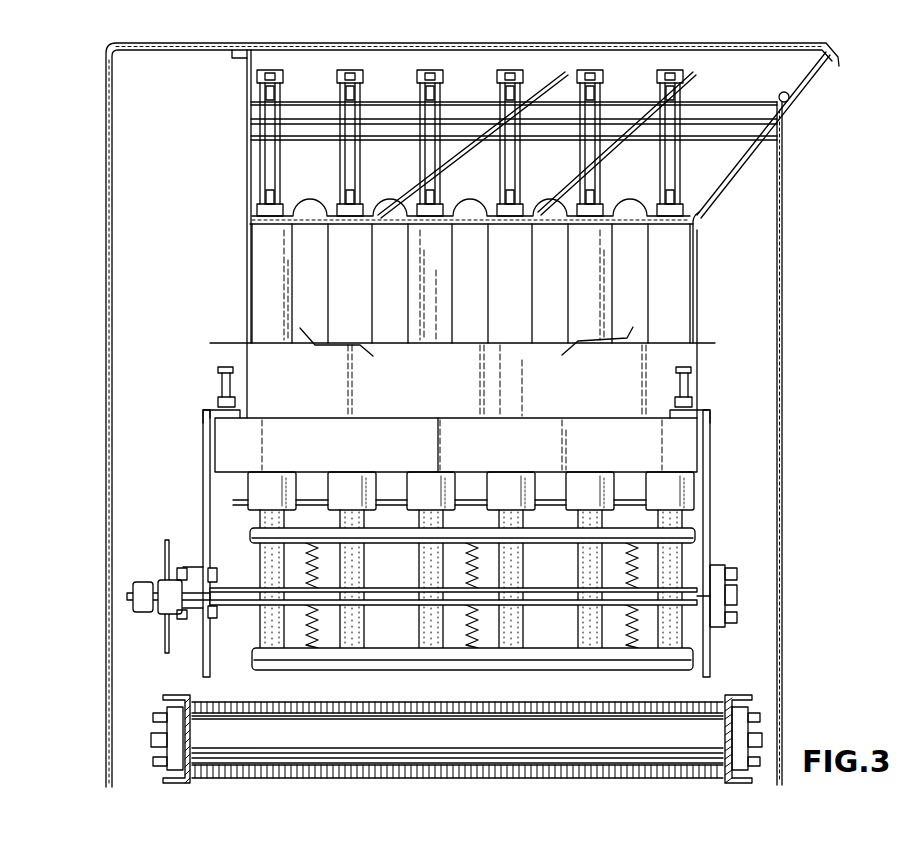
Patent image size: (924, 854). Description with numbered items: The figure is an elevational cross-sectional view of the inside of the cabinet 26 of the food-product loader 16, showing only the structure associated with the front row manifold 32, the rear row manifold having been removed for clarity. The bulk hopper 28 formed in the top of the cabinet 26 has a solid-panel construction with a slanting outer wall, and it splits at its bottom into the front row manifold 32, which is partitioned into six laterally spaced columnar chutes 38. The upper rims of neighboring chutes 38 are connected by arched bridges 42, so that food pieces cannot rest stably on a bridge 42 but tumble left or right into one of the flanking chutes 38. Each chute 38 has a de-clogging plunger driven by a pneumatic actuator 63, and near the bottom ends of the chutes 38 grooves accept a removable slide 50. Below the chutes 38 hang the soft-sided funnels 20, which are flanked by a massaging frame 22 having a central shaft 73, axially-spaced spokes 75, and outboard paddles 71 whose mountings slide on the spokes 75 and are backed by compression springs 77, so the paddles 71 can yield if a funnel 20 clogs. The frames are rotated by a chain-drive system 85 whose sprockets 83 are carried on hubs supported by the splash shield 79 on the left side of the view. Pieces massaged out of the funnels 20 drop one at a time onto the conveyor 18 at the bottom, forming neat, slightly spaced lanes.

The food-product loader 16 is at (810, 572).
The conveyor 18 is at (210, 702).
The soft-sided funnel 20 is at (443, 630).
The massaging frame 22 is at (557, 668).
The cabinet 26 is at (113, 285).
The bulk hopper 28 is at (807, 68).
The front row manifold 32 is at (706, 226).
The front row columnar chute 38 is at (690, 272).
The arched bridge 42 is at (628, 202).
The removable slide 50 is at (233, 505).
The pneumatic actuator 63 is at (281, 162).
The paddle 71 is at (453, 590).
The central shaft 73 is at (393, 604).
The spoke 75 is at (300, 640).
The compression spring 77 is at (318, 638).
The splash shield 79 is at (215, 441).
The sprocket 83 is at (185, 530).
The chain-drive system 85 is at (717, 596).